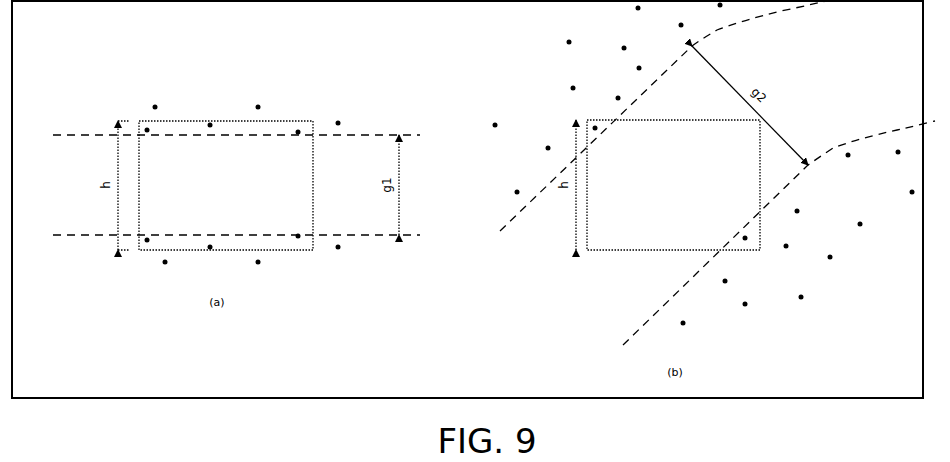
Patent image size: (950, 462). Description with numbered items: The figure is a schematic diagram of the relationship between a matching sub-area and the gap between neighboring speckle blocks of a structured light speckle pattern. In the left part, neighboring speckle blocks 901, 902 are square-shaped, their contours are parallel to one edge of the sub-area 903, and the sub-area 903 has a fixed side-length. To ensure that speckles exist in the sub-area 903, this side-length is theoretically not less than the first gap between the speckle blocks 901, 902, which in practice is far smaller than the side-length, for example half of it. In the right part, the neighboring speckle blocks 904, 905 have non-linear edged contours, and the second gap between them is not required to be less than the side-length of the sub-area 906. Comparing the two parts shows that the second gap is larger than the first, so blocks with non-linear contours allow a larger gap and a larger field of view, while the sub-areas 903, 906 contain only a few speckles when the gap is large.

The speckle block 901 is at (103, 134).
The speckle block 902 is at (103, 237).
The sub-area 903 is at (157, 121).
The speckle block 904 is at (538, 188).
The speckle block 905 is at (660, 313).
The sub-area 906 is at (613, 251).